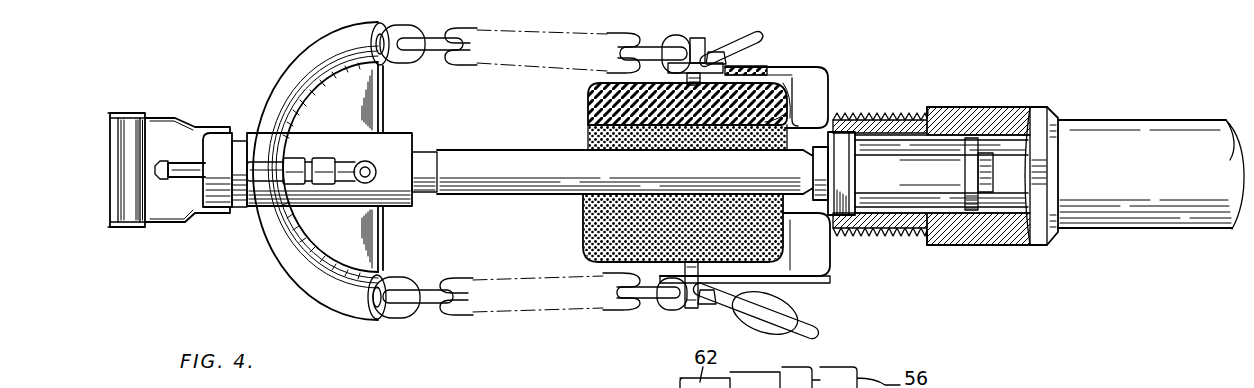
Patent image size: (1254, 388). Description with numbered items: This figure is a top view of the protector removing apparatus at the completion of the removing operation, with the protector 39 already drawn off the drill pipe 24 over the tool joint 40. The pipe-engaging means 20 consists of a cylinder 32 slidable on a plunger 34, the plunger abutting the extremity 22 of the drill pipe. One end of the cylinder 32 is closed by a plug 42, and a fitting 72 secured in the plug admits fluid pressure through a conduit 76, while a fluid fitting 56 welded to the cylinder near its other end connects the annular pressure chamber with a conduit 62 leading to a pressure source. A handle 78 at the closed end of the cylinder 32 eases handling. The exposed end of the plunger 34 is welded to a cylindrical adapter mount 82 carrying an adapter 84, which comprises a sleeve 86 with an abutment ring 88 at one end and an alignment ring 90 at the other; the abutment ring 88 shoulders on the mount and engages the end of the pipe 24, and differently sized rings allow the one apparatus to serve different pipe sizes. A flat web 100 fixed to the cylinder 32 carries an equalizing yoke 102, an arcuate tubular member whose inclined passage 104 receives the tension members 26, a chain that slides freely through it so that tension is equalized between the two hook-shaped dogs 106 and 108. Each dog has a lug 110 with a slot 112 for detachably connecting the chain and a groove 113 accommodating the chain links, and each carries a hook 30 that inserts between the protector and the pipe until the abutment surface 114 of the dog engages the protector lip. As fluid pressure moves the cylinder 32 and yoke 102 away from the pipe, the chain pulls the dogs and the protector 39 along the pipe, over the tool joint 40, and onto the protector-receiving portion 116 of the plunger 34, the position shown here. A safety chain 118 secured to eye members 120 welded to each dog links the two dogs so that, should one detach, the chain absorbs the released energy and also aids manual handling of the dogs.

The pipe-engaging means 20 is at (420, 210).
The extremity of the drill pipe 22 is at (843, 131).
The drill pipe 24 is at (1118, 123).
The tension members 26 is at (620, 33).
The hooks 30 is at (770, 128).
The cylinder 32 is at (398, 134).
The plunger 34 is at (468, 152).
The protector 39 is at (590, 96).
The tool joint 40 is at (984, 108).
The plug 42 is at (204, 141).
The fluid fitting 56 is at (367, 165).
The conduit 62 is at (256, 167).
The fitting 72 is at (193, 200).
The conduit 76 is at (160, 180).
The handle 78 is at (129, 123).
The cylindrical adapter mount 82 is at (983, 171).
The adapter 84 is at (901, 206).
The sleeve 86 is at (951, 191).
The abutment ring 88 is at (846, 215).
The alignment ring 90 is at (981, 195).
The flat web 100 is at (375, 92).
The equalizing yoke 102 is at (298, 266).
The passage 104 is at (386, 312).
The hook-shaped dog 106 is at (790, 67).
The hook-shaped dog 108 is at (828, 266).
The lug 110 is at (697, 38).
The slot 112 is at (746, 48).
The groove 113 is at (718, 53).
The abutment surface 114 is at (794, 88).
The protector-receiving portion 116 is at (600, 143).
The safety chain 118 is at (681, 228).
The eye members 120 is at (686, 308).